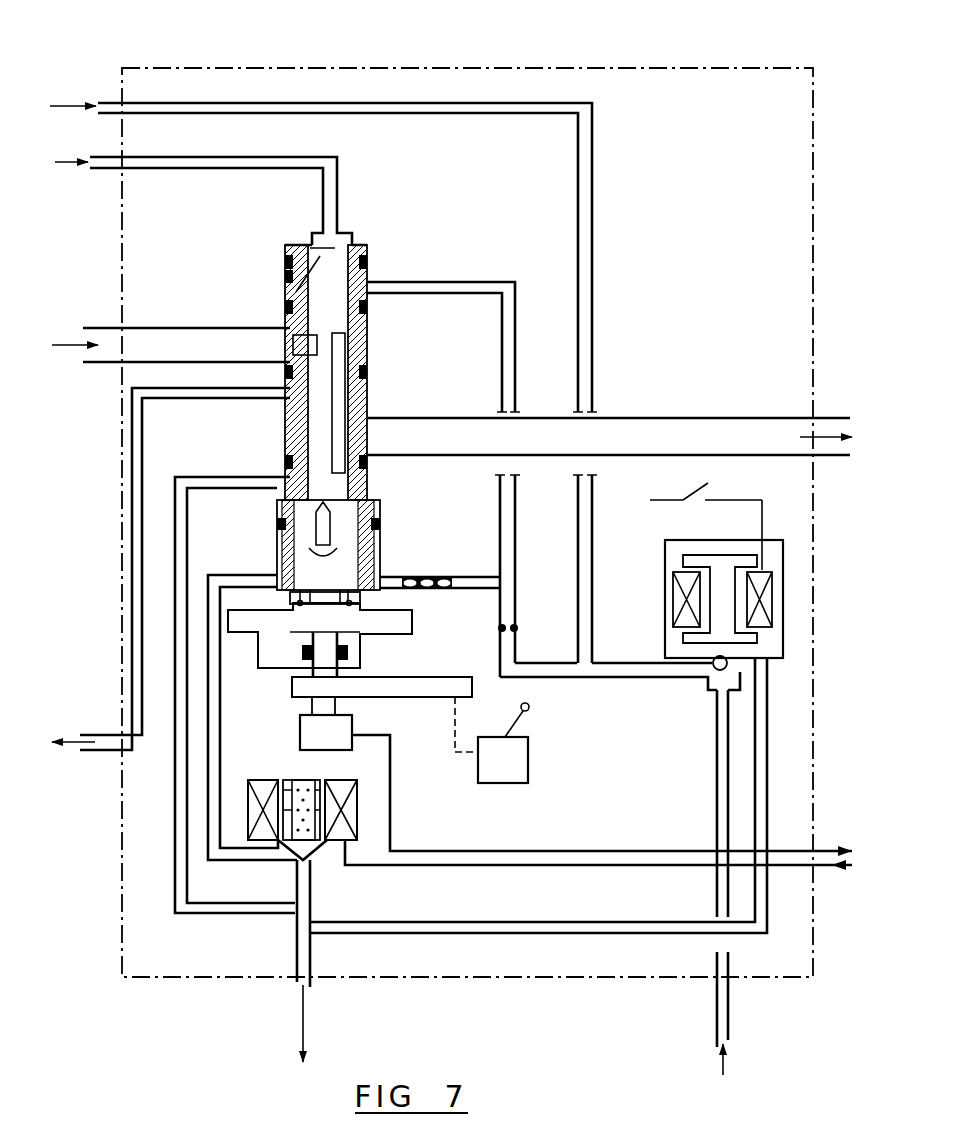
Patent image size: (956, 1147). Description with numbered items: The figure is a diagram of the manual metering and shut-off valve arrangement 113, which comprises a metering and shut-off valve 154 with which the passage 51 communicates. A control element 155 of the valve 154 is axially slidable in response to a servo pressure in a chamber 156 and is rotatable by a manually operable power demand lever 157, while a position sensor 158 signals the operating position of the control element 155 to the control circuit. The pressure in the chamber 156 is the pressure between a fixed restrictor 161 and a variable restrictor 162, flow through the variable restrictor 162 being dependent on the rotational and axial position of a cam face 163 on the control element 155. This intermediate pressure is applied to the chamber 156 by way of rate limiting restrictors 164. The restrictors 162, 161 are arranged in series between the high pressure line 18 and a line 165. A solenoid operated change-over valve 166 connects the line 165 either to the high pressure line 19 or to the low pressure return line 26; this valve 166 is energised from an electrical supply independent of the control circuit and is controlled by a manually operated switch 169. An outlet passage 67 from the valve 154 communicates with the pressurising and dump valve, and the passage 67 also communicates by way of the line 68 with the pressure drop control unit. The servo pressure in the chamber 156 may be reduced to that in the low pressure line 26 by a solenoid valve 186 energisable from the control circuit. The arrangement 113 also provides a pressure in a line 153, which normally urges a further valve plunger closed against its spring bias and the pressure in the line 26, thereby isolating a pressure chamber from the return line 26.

The high pressure line 18 is at (100, 170).
The high pressure line 19 is at (728, 1005).
The low pressure return line 26 is at (295, 985).
The passage 51 is at (90, 364).
The outlet passage 67 is at (808, 417).
The line 68 is at (90, 752).
The valve arrangement 113 is at (520, 963).
The line 153 is at (108, 99).
The metering and shut-off valve 154 is at (370, 392).
The control element 155 is at (316, 422).
The chamber 156 is at (352, 617).
The manually operable power demand lever 157 is at (524, 764).
The position sensor 158 is at (305, 733).
The fixed restrictor 161 is at (512, 630).
The variable restrictor 162 is at (290, 277).
The cam face 163 is at (318, 254).
The rate limiting restrictors 164 is at (432, 577).
The line 165 is at (620, 680).
The solenoid operated change-over valve 166 is at (790, 585).
The manually operated switch 169 is at (690, 496).
The solenoid valve 186 is at (292, 778).